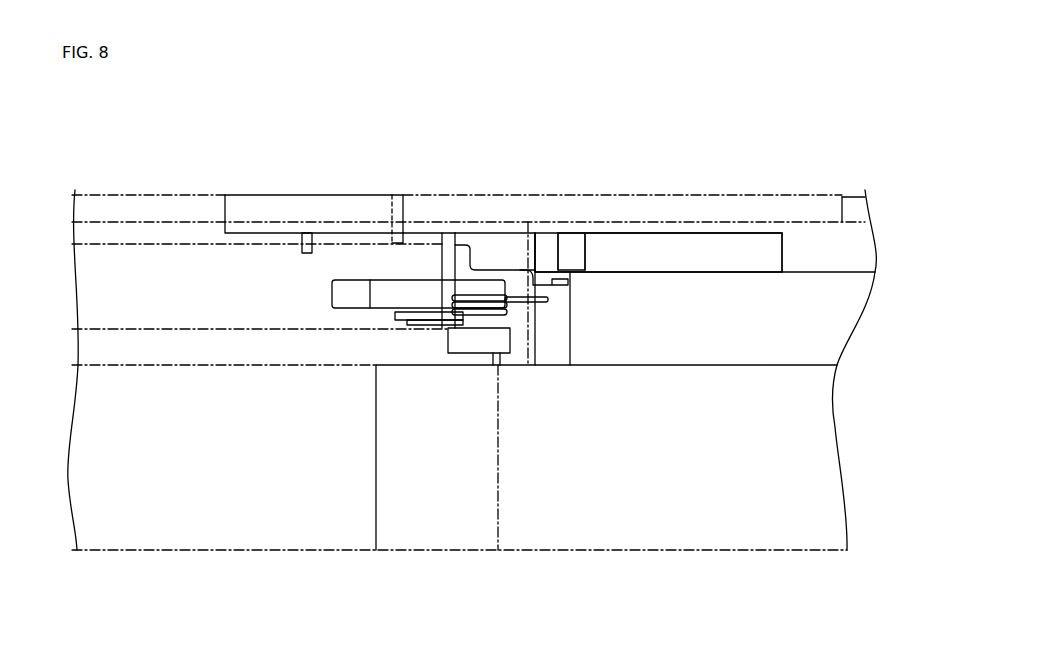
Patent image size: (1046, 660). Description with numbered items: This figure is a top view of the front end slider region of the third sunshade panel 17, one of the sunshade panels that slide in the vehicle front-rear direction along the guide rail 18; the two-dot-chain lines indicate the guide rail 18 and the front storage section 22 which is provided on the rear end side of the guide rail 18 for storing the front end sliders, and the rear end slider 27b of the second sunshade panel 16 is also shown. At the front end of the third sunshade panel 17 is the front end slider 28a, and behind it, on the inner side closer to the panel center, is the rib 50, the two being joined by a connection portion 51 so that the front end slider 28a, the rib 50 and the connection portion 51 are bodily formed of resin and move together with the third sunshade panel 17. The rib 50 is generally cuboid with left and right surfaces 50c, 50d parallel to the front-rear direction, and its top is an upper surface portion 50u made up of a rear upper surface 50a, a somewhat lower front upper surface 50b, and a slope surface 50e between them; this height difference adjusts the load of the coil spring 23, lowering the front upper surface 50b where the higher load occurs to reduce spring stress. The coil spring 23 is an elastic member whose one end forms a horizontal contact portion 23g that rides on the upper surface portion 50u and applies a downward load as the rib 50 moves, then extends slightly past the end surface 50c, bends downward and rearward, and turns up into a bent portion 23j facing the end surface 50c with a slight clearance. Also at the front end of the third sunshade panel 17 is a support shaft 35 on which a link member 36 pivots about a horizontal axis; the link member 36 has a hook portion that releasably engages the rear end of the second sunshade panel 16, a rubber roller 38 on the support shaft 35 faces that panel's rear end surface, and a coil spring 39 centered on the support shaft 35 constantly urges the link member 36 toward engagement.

The second sunshade panel 16 is at (195, 460).
The third sunshade panel 17 is at (563, 503).
The guide rail 18 is at (158, 205).
The front storage section 22 is at (200, 190).
The coil spring 23 is at (536, 230).
The contact portion 23g is at (530, 256).
The bent portion 23j is at (558, 289).
The rear end slider 27b is at (428, 208).
The front end slider 28a is at (284, 207).
The support shaft 35 is at (477, 358).
The link member 36 is at (380, 292).
The rubber roller 38 is at (502, 348).
The coil spring 39 is at (470, 312).
The rib 50 is at (712, 245).
The rear upper surface 50a is at (653, 255).
The front upper surface 50b is at (492, 238).
The left surface 50c is at (705, 273).
The right surface 50d is at (770, 233).
The slope surface 50e is at (563, 250).
The upper surface portion 50u is at (683, 191).
The connection portion 51 is at (308, 250).